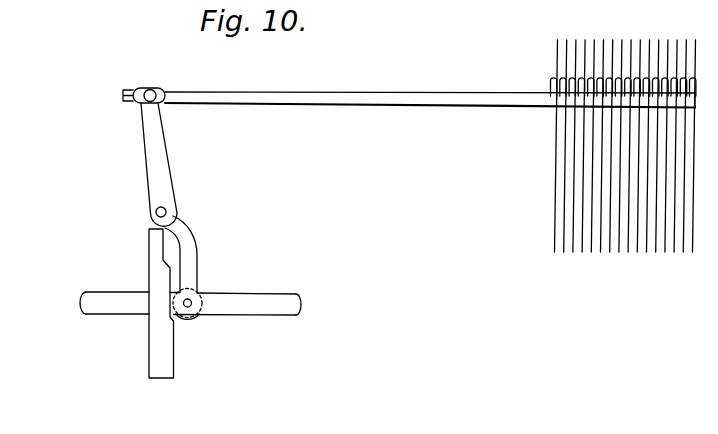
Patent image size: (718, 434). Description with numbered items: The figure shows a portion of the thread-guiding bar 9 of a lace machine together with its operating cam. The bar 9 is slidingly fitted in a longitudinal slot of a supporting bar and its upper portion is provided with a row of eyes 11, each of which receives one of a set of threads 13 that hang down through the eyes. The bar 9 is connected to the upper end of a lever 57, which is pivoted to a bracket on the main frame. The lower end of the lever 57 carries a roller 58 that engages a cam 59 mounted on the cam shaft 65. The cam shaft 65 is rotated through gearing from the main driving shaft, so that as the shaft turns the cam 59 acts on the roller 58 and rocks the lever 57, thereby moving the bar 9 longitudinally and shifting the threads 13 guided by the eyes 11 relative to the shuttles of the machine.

The thread-guiding bar 9 is at (356, 105).
The eyes 11 is at (576, 78).
The set of threads 13 is at (599, 200).
The lever 57 is at (153, 157).
The roller 58 is at (196, 318).
The cam 59 is at (155, 353).
The cam shaft 65 is at (252, 302).